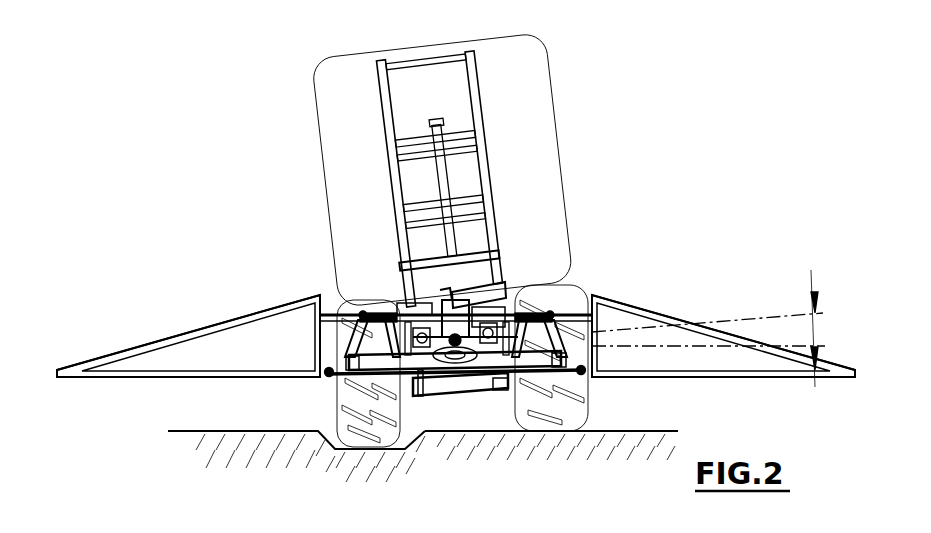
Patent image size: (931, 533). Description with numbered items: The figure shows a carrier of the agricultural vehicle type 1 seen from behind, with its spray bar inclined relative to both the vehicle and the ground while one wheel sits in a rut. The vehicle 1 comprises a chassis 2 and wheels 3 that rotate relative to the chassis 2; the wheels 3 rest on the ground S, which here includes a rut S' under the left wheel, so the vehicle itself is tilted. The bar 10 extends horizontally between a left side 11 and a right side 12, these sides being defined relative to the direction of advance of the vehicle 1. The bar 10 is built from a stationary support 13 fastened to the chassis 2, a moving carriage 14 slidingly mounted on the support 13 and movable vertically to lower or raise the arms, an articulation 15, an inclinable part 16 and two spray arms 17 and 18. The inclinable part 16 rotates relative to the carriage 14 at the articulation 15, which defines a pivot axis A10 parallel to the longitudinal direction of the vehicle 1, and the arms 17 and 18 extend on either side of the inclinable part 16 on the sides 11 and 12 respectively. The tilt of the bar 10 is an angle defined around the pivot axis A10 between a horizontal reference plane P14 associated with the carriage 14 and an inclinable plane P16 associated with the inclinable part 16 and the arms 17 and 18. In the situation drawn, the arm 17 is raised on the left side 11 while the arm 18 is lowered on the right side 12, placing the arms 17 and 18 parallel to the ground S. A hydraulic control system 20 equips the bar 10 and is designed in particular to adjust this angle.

The agricultural vehicle 1 is at (196, 108).
The chassis 2 is at (545, 262).
The wheels 3 is at (357, 415).
The bar 10 is at (303, 250).
The left side 11 is at (99, 285).
The right side 12 is at (726, 268).
The stationary support 13 is at (478, 103).
The moving carriage 14 is at (428, 380).
The articulation 15 is at (447, 362).
The inclinable part 16 is at (497, 390).
The spray arm 17 is at (260, 307).
The spray arm 18 is at (636, 303).
The hydraulic control system 20 is at (518, 252).
The pivot axis A10 is at (457, 348).
The horizontal reference plane P14 is at (762, 313).
The inclinable plane P16 is at (798, 347).
The ground S is at (557, 429).
The rut S' is at (296, 437).